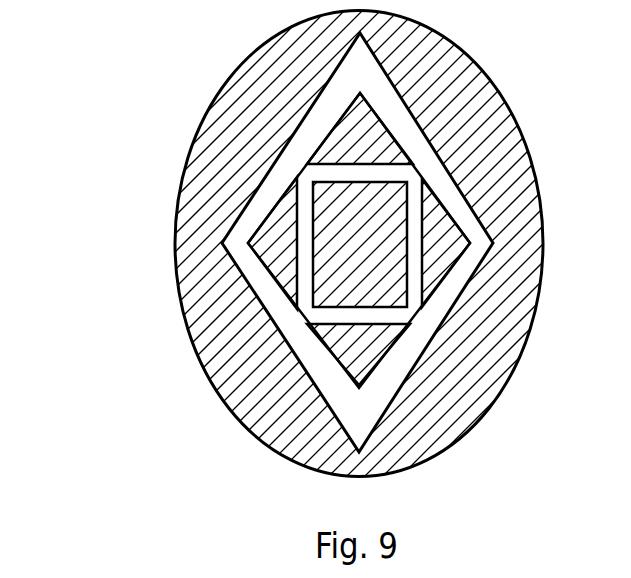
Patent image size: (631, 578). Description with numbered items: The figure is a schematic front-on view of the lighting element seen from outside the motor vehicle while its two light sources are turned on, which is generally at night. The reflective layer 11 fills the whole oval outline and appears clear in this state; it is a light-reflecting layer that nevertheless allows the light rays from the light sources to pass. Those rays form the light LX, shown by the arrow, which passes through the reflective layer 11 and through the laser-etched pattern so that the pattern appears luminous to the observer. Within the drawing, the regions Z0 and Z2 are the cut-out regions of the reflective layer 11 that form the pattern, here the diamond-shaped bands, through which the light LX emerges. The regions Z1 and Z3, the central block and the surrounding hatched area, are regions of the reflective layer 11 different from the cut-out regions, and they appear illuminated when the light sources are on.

The reflective layer 11 is at (458, 78).
The light LX is at (292, 142).
The region Z0 is at (302, 213).
The region Z1 is at (342, 240).
The region Z2 is at (250, 290).
The region Z3 is at (255, 367).